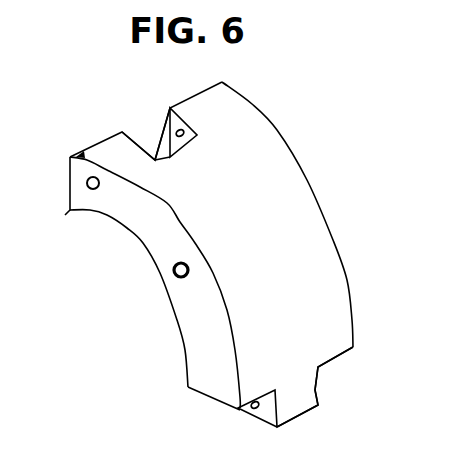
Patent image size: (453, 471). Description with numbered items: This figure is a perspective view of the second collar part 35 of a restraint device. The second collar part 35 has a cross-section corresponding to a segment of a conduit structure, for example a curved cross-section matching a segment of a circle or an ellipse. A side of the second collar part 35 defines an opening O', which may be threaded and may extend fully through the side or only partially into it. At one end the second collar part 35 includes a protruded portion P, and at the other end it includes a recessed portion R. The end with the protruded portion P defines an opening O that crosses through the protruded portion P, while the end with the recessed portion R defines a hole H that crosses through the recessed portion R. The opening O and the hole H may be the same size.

The second collar part 35 is at (90, 102).
The recessed portion R is at (155, 138).
The hole H is at (87, 183).
The opening O' is at (125, 303).
The opening O is at (216, 296).
The protruded portion P is at (323, 388).